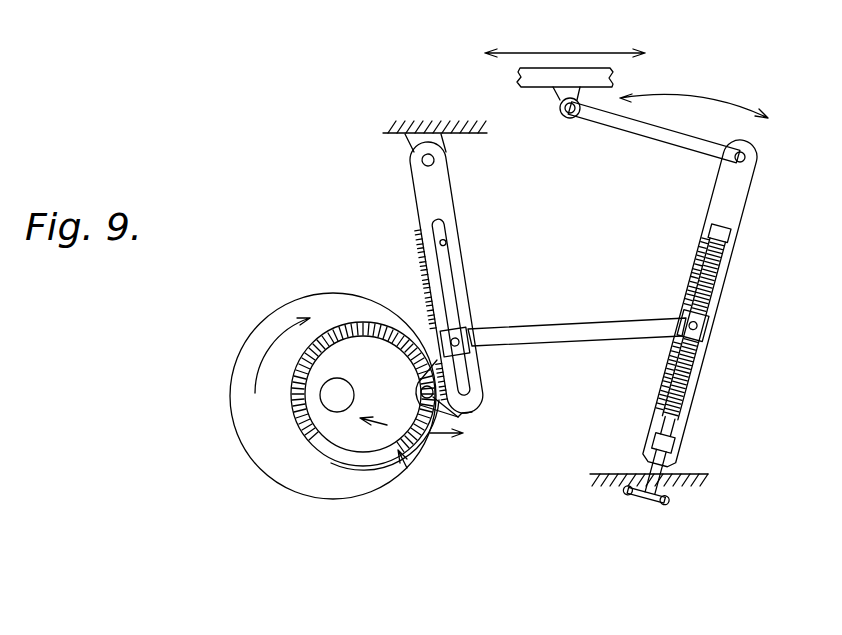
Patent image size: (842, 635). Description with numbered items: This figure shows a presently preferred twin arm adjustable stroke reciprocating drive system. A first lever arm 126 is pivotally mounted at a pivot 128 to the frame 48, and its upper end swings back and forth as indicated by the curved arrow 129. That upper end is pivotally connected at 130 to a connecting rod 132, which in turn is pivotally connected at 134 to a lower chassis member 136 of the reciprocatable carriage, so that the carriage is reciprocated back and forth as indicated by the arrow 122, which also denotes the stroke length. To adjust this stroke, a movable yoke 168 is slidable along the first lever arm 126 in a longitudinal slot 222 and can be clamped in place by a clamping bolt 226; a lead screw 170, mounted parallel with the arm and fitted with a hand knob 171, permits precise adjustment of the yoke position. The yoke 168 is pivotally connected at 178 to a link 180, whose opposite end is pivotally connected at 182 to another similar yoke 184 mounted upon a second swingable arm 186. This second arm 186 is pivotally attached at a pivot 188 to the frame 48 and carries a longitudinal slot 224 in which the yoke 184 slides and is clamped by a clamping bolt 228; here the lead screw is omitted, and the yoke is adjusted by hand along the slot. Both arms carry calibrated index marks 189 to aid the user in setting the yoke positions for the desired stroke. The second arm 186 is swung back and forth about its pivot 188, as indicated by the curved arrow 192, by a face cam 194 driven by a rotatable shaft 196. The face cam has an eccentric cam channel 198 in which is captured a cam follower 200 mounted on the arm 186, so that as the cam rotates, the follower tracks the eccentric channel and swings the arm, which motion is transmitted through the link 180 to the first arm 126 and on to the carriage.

The frame 48 is at (375, 130).
The arrow (stroke length) 122 is at (533, 50).
The lower chassis member 136 is at (615, 80).
The curved arrow 129 is at (740, 100).
The connecting rod 132 is at (643, 133).
The pivotal connection 134 is at (575, 122).
The pivotal connection 130 is at (750, 158).
The first lever arm 126 is at (745, 218).
The clamping bolt 226 is at (700, 335).
The lead screw 170 is at (720, 272).
The longitudinal slot 222 is at (680, 370).
The movable yoke 168 is at (707, 328).
The pivotal connection 178 is at (700, 333).
The pivot 128 is at (665, 462).
The hand knob 171 is at (658, 506).
The link 180 is at (576, 325).
The yoke 184 is at (481, 364).
The pivot 188 is at (421, 160).
The longitudinal slot 224 is at (446, 244).
The calibrated index marks 189 is at (432, 272).
The pivotal connection 182 is at (464, 338).
The clamping bolt 228 is at (457, 336).
The second swingable arm 186 is at (485, 401).
The face cam 194 is at (312, 297).
The curved arrow 192 is at (387, 427).
The rotatable shaft 196 is at (345, 386).
The cam follower 200 is at (460, 418).
The eccentric cam channel 198 is at (407, 468).